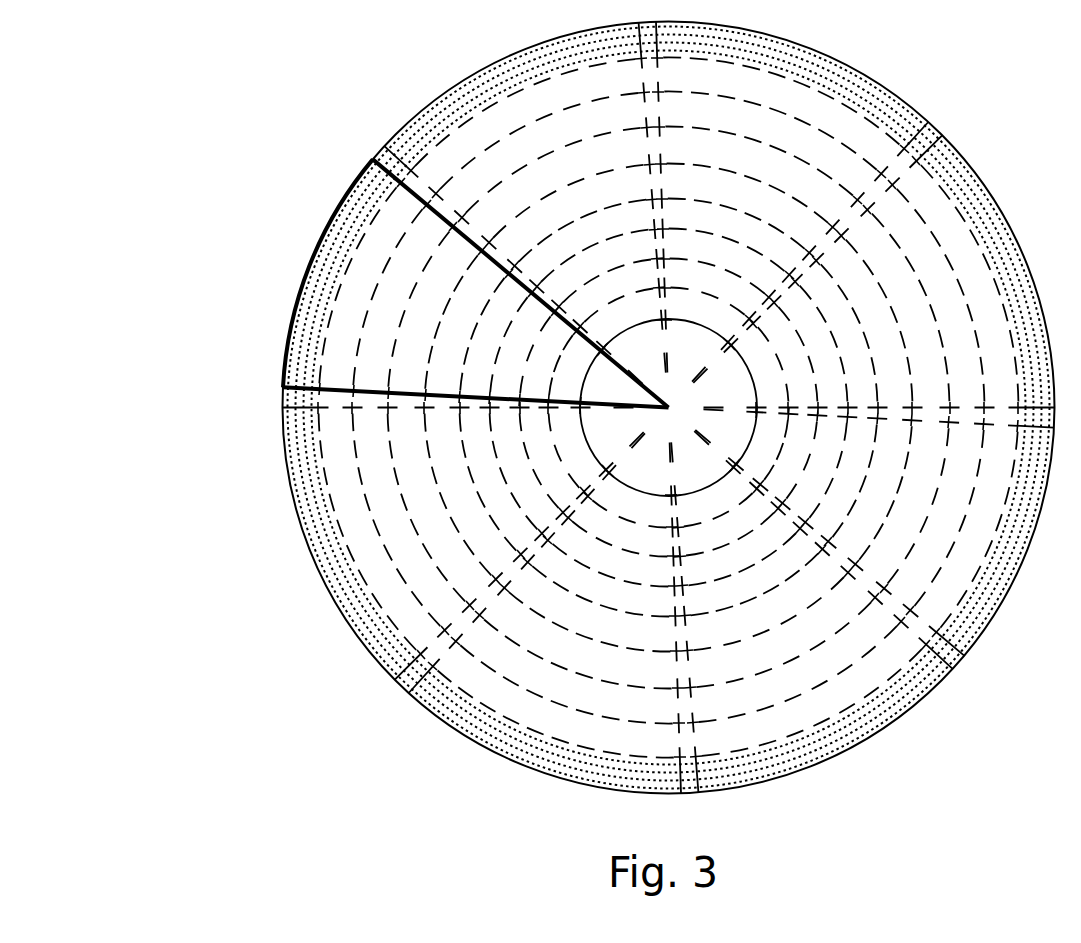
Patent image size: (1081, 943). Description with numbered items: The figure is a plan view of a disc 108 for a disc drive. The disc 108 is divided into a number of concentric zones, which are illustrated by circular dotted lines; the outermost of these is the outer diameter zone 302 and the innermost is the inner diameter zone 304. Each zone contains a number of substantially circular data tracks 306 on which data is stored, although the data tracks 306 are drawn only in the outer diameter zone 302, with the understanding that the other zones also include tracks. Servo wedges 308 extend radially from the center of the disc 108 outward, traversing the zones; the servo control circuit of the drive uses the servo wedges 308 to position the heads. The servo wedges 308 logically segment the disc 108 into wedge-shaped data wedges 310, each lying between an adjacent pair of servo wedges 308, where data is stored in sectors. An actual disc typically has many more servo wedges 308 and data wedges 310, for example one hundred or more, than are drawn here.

The disc 108 is at (124, 252).
The outer diameter zone 302 is at (285, 342).
The inner diameter zone 304 is at (570, 447).
The data tracks 306 is at (303, 263).
The servo wedges 308 is at (282, 386).
The data wedges 310 is at (345, 192).